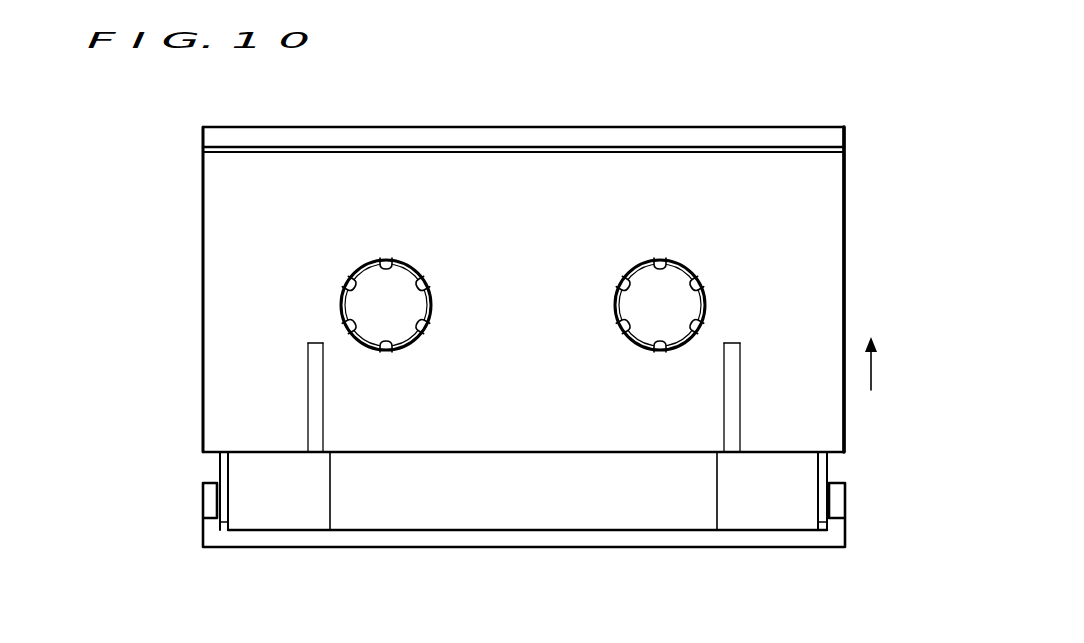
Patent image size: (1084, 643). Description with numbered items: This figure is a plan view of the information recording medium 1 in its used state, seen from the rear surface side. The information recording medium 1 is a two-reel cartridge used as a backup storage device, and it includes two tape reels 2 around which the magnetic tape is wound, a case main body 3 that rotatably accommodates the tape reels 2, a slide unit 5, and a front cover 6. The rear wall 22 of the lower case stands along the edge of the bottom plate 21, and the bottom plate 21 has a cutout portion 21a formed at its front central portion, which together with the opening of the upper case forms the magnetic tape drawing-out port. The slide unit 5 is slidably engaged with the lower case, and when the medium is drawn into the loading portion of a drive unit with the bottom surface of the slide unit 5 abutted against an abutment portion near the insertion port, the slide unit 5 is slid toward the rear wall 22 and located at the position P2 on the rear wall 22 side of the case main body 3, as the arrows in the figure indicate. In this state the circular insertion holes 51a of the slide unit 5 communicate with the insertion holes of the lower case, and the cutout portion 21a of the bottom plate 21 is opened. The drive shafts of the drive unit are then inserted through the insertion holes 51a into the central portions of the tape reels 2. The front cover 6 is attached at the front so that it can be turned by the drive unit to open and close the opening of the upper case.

The information recording medium 1 is at (497, 113).
The rear wall 22 is at (557, 138).
The slide unit 5 is at (828, 272).
The position P2 is at (184, 290).
The case main body 3 is at (860, 308).
The tape reel 2 is at (387, 262).
The insertion hole 51a is at (374, 285).
The bottom plate 21 is at (287, 505).
The cutout portion 21a is at (634, 307).
The front cover 6 is at (835, 538).